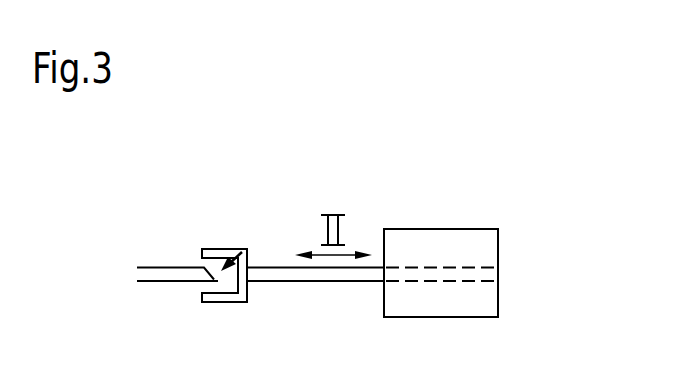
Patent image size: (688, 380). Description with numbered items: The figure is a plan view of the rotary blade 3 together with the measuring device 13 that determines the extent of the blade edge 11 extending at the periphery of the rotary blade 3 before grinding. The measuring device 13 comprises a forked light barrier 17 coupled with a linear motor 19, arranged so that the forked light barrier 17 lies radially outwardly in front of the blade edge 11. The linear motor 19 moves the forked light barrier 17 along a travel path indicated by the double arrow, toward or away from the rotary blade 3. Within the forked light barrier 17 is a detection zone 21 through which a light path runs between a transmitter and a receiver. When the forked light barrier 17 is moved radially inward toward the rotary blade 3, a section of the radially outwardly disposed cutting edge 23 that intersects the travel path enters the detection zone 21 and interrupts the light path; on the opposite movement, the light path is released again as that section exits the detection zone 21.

The rotary blade 3 is at (138, 233).
The blade edge 11 is at (177, 283).
The measuring device 13 is at (449, 192).
The forked light barrier 17 is at (218, 248).
The linear motor 19 is at (489, 229).
The detection zone 21 is at (243, 248).
The cutting edge 23 is at (214, 294).